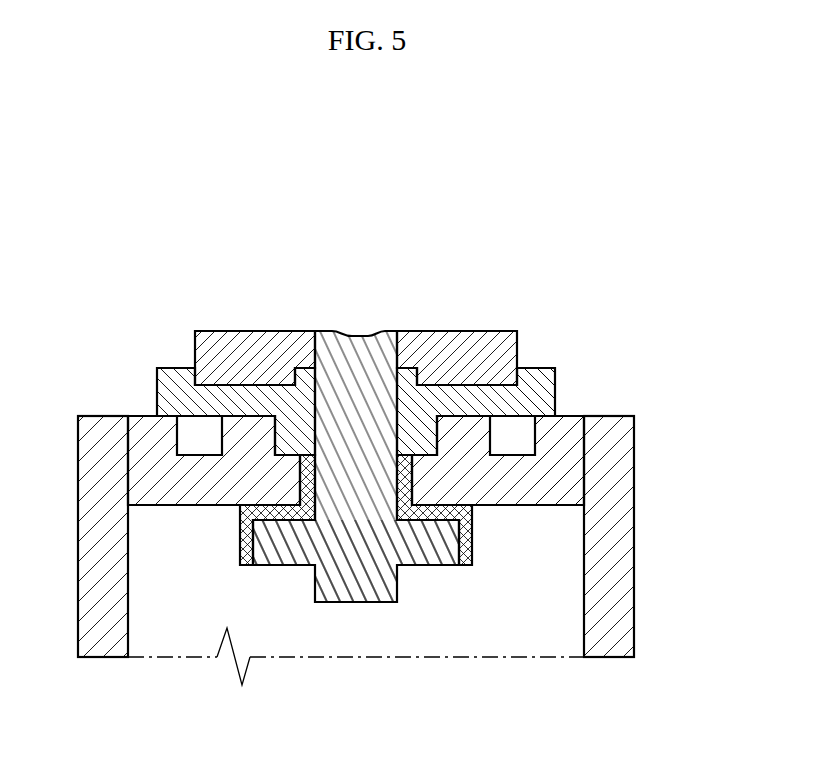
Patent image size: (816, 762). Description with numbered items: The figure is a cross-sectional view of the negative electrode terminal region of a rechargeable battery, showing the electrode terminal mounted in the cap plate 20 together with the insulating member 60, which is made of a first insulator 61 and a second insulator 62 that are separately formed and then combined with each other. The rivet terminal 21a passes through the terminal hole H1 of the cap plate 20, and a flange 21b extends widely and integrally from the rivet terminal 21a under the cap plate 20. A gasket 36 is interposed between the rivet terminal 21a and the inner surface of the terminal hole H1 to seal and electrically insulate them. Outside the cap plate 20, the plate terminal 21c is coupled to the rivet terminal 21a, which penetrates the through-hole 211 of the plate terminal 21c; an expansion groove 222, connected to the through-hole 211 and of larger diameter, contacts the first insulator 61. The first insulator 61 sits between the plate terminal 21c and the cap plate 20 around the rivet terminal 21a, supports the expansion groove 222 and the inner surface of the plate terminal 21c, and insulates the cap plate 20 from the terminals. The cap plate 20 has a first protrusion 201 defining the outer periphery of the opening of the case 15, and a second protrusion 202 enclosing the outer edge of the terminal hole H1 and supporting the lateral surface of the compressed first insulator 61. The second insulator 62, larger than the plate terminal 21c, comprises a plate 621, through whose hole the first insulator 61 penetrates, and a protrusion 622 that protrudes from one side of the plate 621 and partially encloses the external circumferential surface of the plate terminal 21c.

The case 15 is at (610, 593).
The cap plate 20 is at (418, 575).
The first protrusion 201 is at (567, 432).
The second protrusion 202 is at (467, 432).
The rivet terminal 21a is at (340, 602).
The flange 21b is at (272, 547).
The plate terminal 21c is at (212, 340).
The through-hole 211 is at (332, 358).
The expansion groove 222 is at (308, 362).
The gasket 36 is at (300, 468).
The insulating member 60 is at (527, 281).
The first insulator 61 is at (400, 360).
The second insulator 62 is at (510, 307).
The plate 621 is at (468, 398).
The protrusion 622 is at (542, 338).
The terminal hole H1 is at (300, 492).